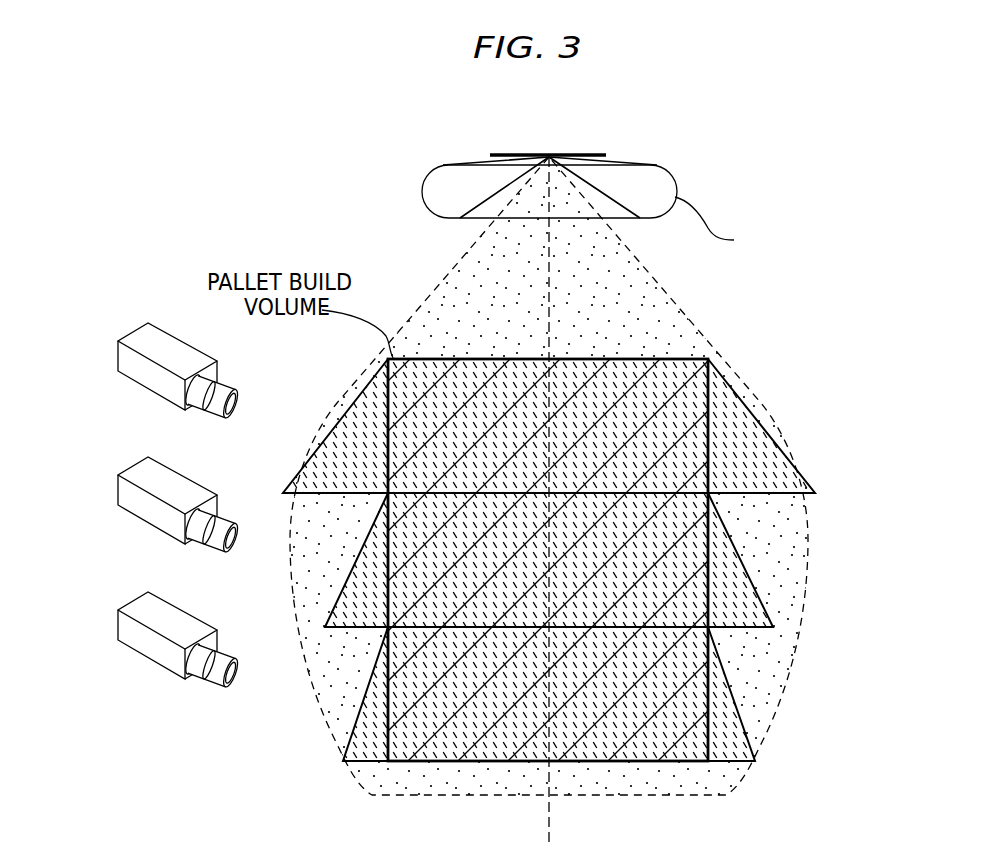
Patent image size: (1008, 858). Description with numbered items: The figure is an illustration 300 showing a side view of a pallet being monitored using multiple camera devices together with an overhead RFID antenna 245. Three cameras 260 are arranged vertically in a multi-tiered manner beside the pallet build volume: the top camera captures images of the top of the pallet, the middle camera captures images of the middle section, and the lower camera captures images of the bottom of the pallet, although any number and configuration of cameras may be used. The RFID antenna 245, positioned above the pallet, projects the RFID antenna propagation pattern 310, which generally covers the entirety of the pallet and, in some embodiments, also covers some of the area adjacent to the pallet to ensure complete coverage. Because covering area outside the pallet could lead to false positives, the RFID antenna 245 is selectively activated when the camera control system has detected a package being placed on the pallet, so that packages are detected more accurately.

The illustration 300 is at (713, 93).
The RFID antenna 245 is at (571, 148).
The propagation pattern 310 is at (827, 325).
The cameras 260 is at (148, 513).